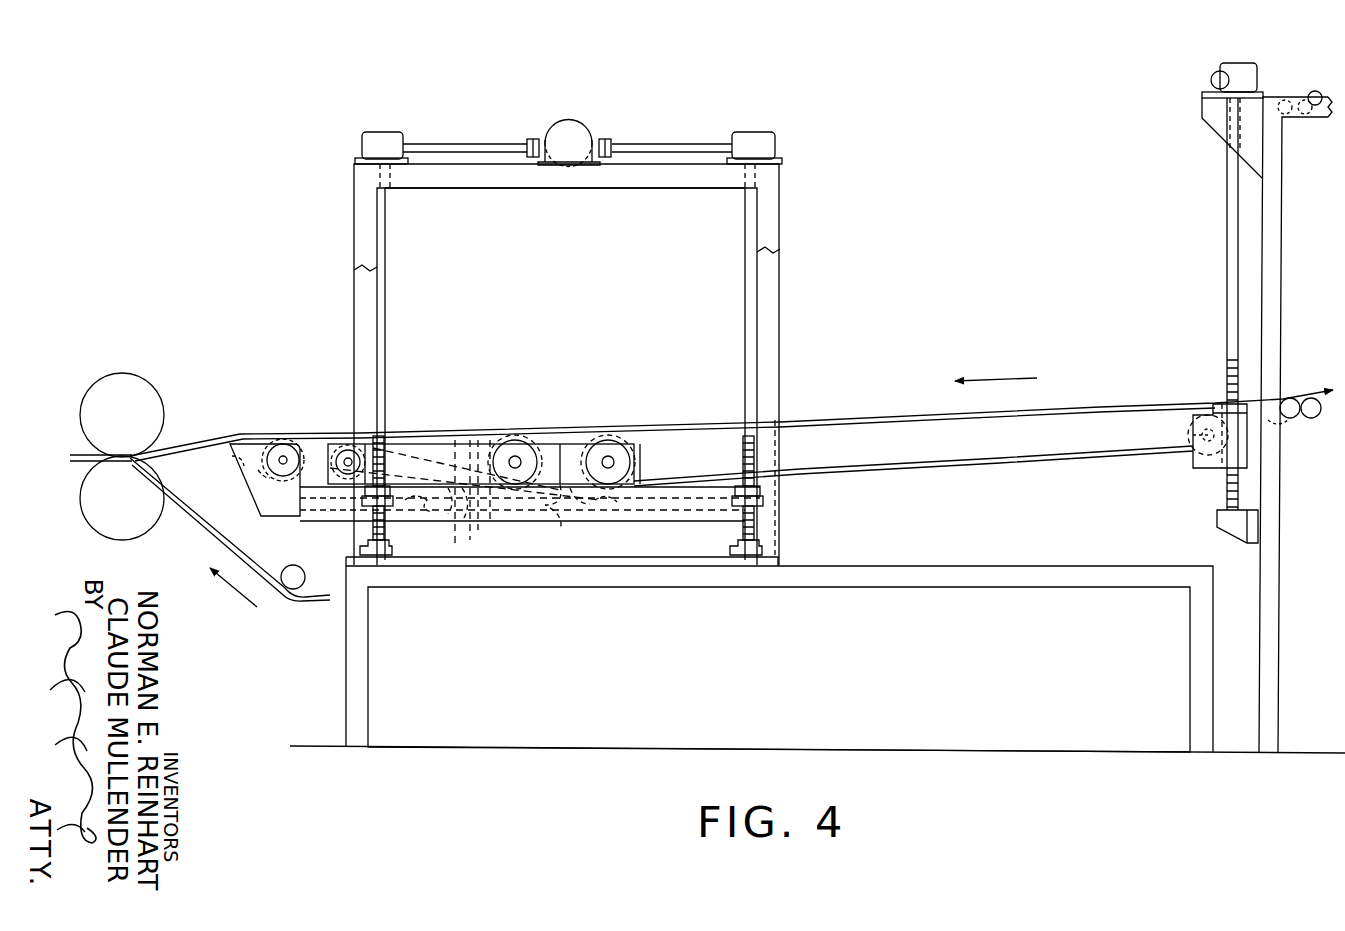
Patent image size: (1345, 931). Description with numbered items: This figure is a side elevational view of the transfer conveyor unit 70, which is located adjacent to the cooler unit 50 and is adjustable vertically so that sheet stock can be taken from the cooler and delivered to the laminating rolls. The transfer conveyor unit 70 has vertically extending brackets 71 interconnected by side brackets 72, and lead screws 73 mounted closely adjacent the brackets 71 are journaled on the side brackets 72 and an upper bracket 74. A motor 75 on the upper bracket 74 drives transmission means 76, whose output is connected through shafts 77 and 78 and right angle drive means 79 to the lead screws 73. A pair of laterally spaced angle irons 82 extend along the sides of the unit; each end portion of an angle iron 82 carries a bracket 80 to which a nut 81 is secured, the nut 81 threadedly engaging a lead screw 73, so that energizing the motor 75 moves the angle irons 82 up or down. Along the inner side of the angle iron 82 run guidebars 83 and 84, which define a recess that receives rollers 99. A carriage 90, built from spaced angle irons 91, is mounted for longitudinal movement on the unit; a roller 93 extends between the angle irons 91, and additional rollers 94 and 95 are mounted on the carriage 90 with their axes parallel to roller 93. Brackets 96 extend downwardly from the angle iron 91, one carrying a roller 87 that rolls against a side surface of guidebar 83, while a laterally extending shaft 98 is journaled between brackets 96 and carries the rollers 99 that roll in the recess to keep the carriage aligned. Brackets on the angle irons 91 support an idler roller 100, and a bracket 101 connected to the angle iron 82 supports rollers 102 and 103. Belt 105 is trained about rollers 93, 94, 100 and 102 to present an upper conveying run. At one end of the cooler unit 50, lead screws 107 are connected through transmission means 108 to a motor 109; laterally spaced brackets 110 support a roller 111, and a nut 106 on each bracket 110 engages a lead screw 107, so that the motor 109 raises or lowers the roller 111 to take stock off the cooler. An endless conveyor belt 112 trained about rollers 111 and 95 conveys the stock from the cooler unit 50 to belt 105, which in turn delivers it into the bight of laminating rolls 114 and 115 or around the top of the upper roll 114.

The cooler unit 50 is at (1200, 203).
The transfer conveyor unit 70 is at (867, 142).
The vertically extending bracket 71 is at (366, 232).
The side bracket 72 is at (550, 563).
The lead screw 73 is at (381, 290).
The upper bracket 74 is at (688, 180).
The motor 75 is at (565, 130).
The transmission means 76 is at (574, 150).
The shaft 77 is at (690, 152).
The shaft 78 is at (454, 152).
The right angle drive means 79 is at (380, 143).
The bracket 80 is at (375, 534).
The nut 81 is at (350, 522).
The angle iron 82 is at (671, 542).
The guidebar 83 is at (674, 519).
The guidebar 84 is at (645, 471).
The roller 87 is at (563, 520).
The carriage 90 is at (570, 422).
The angle iron 91 is at (578, 442).
The roller 93 is at (356, 442).
The roller 94 is at (498, 446).
The roller 95 is at (663, 448).
The bracket 96 is at (562, 438).
The shaft 98 is at (456, 436).
The roller 99 is at (434, 515).
The idler roller 100 is at (473, 438).
The bracket 101 is at (262, 501).
The roller 102 is at (275, 445).
The roller 103 is at (240, 462).
The belt 105 is at (262, 435).
The nut 106 is at (1227, 405).
The lead screw 107 is at (1230, 272).
The transmission means 108 is at (1244, 65).
The motor 109 is at (1212, 80).
The bracket 110 is at (1217, 457).
The roller 111 is at (1194, 445).
The endless conveyor belt 112 is at (958, 468).
The upper laminating roll 114 is at (133, 386).
The lower laminating roll 115 is at (112, 525).